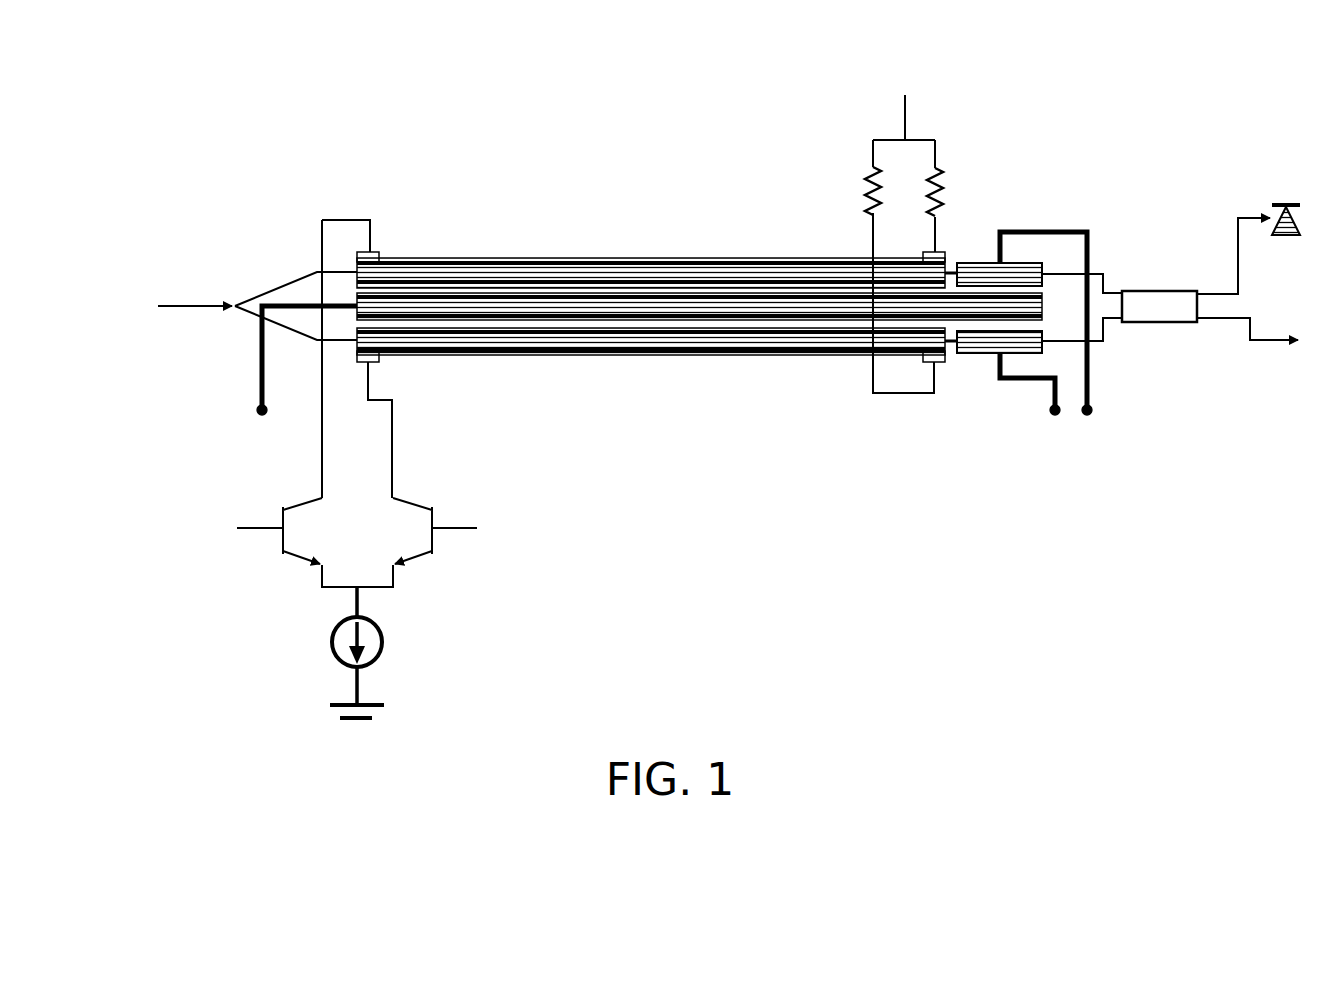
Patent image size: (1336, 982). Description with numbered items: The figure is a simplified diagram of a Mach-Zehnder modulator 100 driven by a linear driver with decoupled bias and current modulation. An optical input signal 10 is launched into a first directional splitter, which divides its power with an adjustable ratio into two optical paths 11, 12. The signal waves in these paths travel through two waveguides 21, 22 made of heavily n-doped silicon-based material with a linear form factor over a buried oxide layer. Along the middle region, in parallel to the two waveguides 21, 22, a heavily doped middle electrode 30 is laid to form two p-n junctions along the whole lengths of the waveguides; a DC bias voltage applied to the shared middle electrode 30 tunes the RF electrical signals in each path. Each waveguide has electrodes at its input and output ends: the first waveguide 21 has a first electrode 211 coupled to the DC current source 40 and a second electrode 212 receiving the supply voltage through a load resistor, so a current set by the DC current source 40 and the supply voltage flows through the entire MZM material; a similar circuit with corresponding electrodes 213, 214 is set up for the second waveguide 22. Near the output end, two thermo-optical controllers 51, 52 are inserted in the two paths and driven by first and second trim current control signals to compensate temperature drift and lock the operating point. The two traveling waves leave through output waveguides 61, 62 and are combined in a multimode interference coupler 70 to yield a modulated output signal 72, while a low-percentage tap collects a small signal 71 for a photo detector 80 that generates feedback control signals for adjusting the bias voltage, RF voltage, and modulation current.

The MZ modulator 100 is at (382, 92).
The optical input signal 10 is at (192, 302).
The first optical path 11 is at (272, 283).
The second optical path 12 is at (288, 335).
The first waveguide 21 is at (562, 263).
The second waveguide 22 is at (603, 352).
The middle electrode 30 is at (674, 296).
The DC current source 40 is at (381, 632).
The first thermo-optical controller 51 is at (1020, 263).
The second thermo-optical controller 52 is at (1015, 352).
The first output waveguide 61 is at (1095, 273).
The second output waveguide 62 is at (1097, 341).
The multimode interference coupler 70 is at (1142, 290).
The small signal 71 is at (1238, 255).
The modulated output signal 72 is at (1265, 342).
The photo detector 80 is at (1282, 205).
The first electrode 211 is at (378, 256).
The second electrode 212 is at (938, 252).
The third electrode 213 is at (376, 362).
The fourth electrode 214 is at (936, 362).